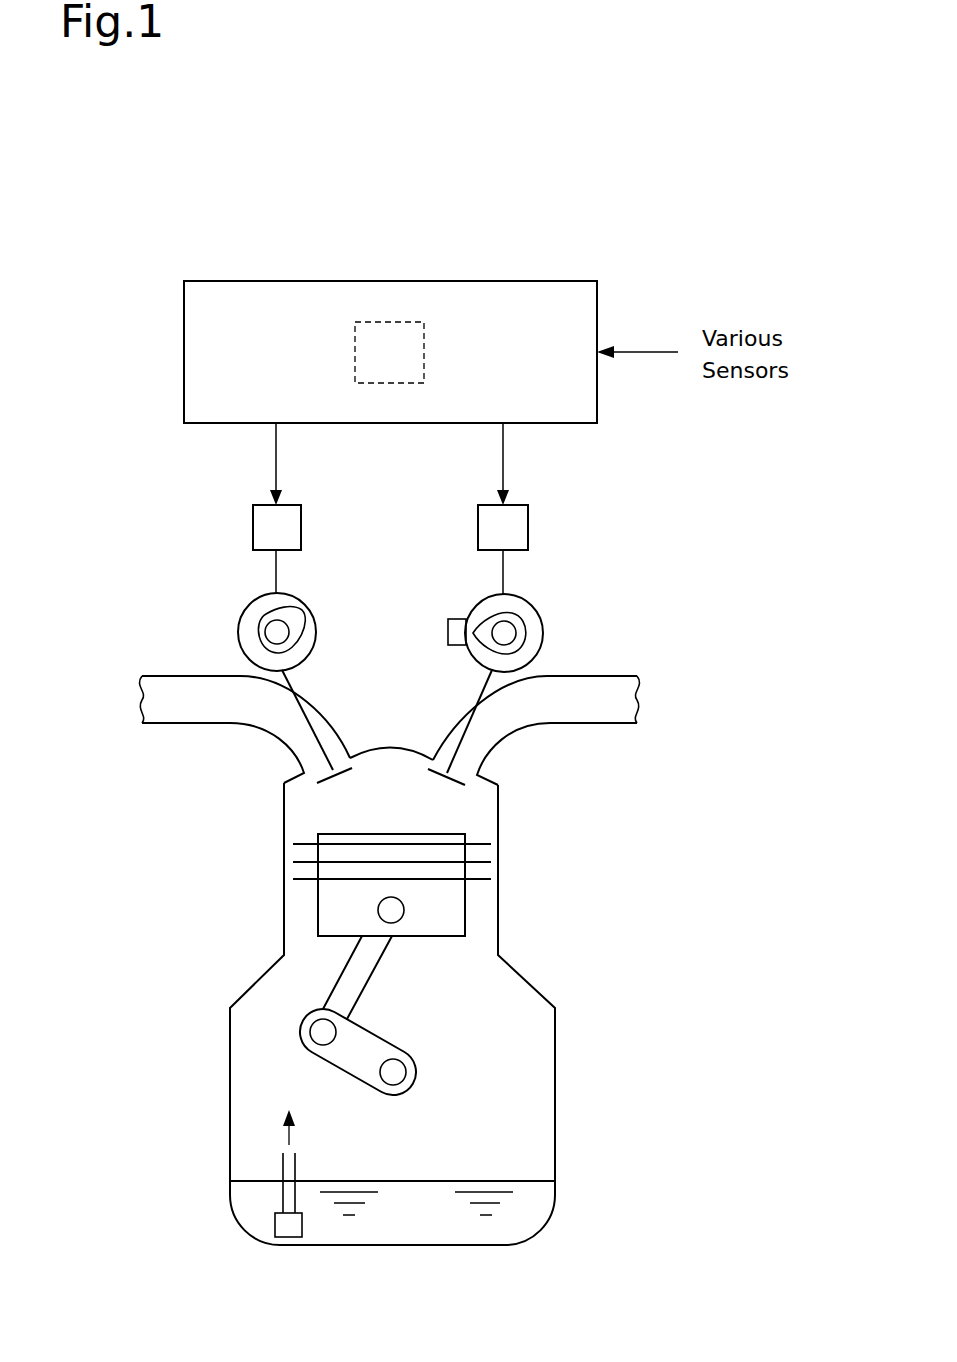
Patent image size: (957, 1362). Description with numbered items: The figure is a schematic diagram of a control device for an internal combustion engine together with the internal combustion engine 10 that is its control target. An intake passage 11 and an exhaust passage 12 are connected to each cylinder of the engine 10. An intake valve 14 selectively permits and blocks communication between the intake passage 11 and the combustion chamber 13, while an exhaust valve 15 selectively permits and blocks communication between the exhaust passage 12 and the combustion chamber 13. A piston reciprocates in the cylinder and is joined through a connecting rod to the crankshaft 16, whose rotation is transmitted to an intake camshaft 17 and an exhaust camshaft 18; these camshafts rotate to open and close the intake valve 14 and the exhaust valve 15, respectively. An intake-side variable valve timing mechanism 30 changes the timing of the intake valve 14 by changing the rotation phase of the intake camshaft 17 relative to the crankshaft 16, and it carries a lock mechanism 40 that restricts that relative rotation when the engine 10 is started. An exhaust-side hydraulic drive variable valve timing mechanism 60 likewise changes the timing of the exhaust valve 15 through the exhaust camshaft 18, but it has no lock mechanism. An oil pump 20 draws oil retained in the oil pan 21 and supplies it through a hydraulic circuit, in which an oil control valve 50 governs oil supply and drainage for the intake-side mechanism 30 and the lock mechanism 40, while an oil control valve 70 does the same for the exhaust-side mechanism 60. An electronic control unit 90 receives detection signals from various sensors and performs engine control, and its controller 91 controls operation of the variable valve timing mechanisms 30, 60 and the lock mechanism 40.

The internal combustion engine 10 is at (580, 885).
The intake passage 11 is at (535, 722).
The exhaust passage 12 is at (189, 718).
The combustion chamber 13 is at (385, 776).
The intake valve 14 is at (457, 740).
The exhaust valve 15 is at (297, 682).
The crankshaft 16 is at (393, 1088).
The intake camshaft 17 is at (508, 631).
The exhaust camshaft 18 is at (268, 633).
The oil pump 20 is at (302, 1225).
The oil pan 21 is at (245, 1228).
The intake-side variable valve timing mechanism 30 is at (482, 603).
The lock mechanism 40 is at (448, 632).
The oil control valve 50 is at (478, 528).
The exhaust-side hydraulic drive variable valve timing mechanism 60 is at (252, 602).
The oil control valve 70 is at (253, 528).
The electronic control unit 90 is at (574, 281).
The controller 91 is at (424, 350).